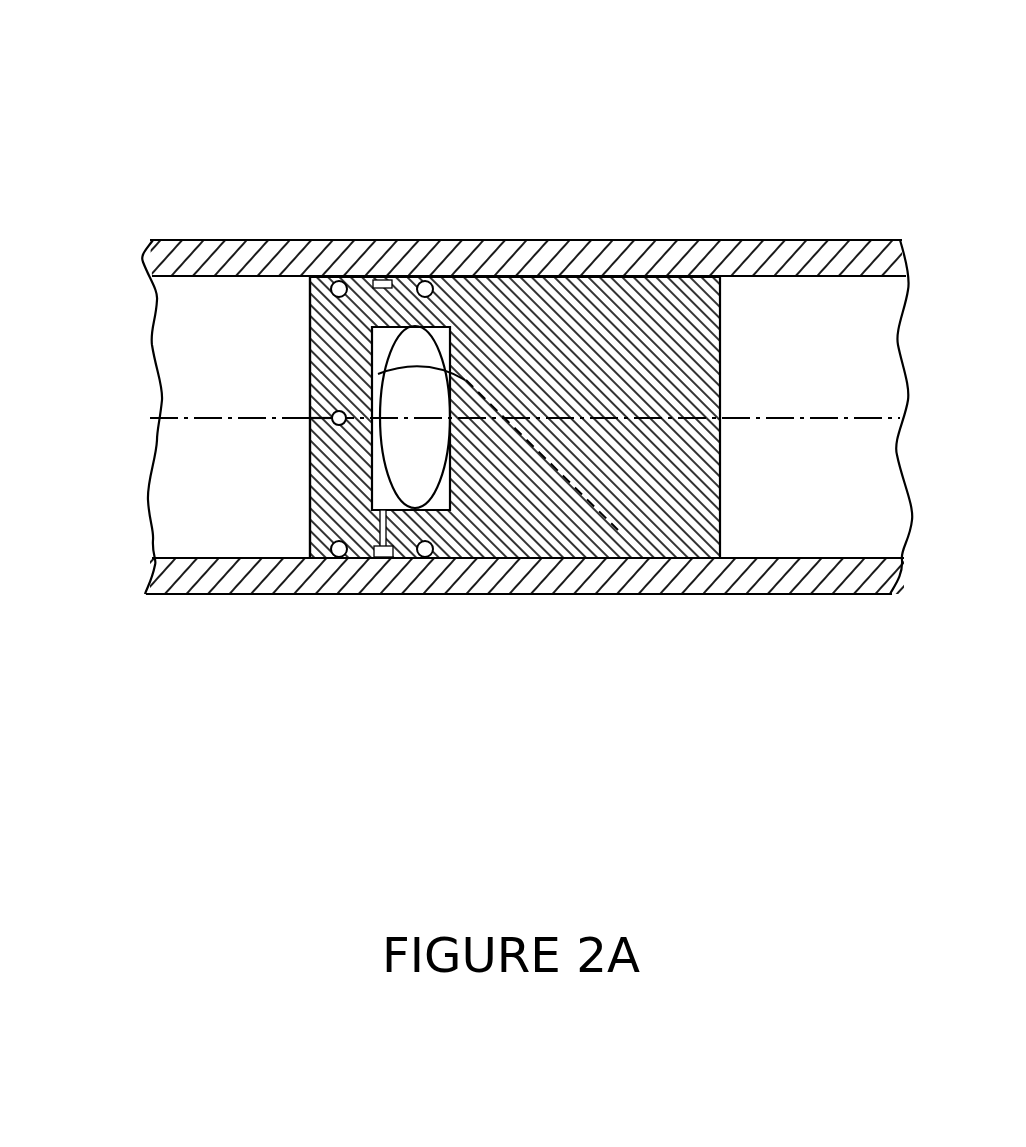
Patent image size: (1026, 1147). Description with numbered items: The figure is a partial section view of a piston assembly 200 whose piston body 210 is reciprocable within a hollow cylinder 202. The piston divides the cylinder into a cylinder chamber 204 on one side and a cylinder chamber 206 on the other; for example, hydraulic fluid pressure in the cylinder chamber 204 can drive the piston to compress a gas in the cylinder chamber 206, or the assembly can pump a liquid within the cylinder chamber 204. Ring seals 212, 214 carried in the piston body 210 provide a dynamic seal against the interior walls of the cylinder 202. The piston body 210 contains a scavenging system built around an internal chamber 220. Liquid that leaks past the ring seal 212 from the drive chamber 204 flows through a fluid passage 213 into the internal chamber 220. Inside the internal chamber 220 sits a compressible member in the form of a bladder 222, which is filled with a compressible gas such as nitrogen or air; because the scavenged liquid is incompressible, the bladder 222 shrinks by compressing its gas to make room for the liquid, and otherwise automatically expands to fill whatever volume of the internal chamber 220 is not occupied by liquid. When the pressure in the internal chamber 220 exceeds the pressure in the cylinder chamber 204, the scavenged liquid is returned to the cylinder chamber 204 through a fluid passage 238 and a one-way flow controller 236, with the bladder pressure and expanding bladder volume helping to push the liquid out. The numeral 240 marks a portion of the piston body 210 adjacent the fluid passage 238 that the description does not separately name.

The piston assembly 200 is at (236, 98).
The cylinder 202 is at (661, 256).
The cylinder chamber 204 is at (272, 491).
The cylinder chamber 206 is at (867, 487).
The piston body 210 is at (642, 347).
The ring seal 212 is at (339, 283).
The fluid passage 213 is at (406, 552).
The ring seal 214 is at (425, 283).
The internal chamber 220 is at (613, 522).
The bladder 222 is at (420, 488).
The one-way flow controller 236 is at (306, 388).
The fluid passage 238 is at (310, 357).
The body portion 240 is at (335, 515).